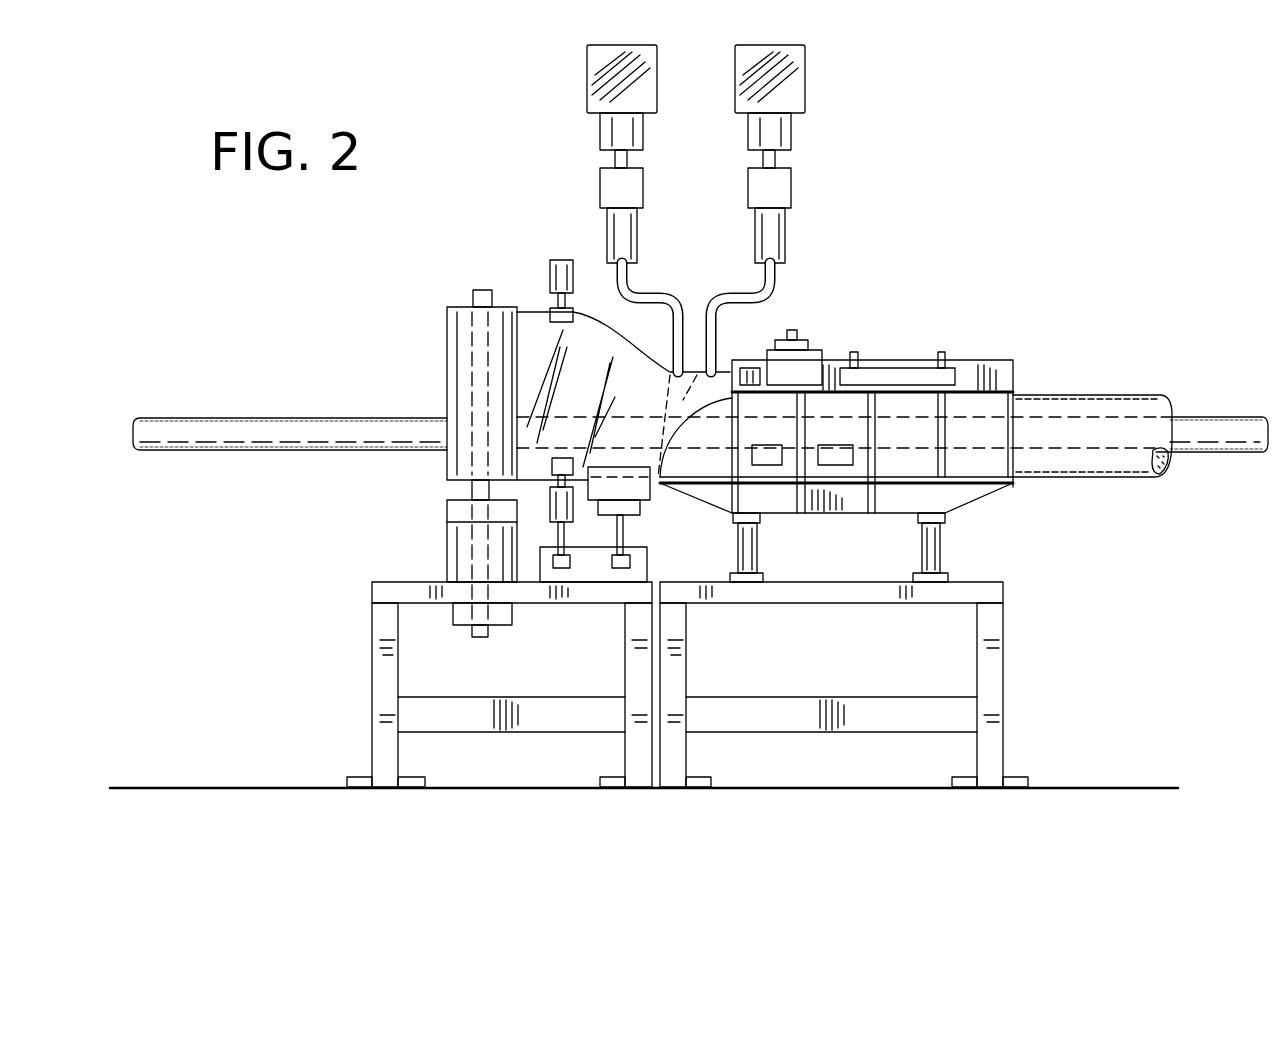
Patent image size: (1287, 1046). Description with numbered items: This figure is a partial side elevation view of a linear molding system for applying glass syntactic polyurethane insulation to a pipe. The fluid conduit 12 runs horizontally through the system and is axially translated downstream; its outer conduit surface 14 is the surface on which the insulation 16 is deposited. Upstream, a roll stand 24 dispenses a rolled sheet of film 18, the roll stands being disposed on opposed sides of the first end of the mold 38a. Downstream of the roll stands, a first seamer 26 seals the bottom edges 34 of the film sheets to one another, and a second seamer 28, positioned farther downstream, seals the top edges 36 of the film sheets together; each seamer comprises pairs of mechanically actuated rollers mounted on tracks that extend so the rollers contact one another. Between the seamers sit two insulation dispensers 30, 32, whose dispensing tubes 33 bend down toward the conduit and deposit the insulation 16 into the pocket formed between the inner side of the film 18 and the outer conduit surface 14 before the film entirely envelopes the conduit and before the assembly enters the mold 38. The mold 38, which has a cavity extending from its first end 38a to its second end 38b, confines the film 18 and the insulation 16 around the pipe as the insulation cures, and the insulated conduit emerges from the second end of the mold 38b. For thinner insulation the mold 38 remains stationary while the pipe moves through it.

The fluid conduit 12 is at (247, 461).
The outer conduit surface 14 is at (368, 447).
The insulation 16 is at (1167, 463).
The film 18 is at (533, 327).
The roll stand 24 is at (473, 297).
The first seamer 26 is at (650, 502).
The second seamer 28 is at (803, 368).
The insulation dispenser 30 is at (587, 96).
The insulation dispenser 32 is at (812, 98).
The dispensing tube 33 is at (630, 297).
The bottom edge 34 is at (548, 481).
The top edge 36 is at (617, 343).
The mold 38 is at (983, 373).
The first end of the mold 38a is at (660, 482).
The second end of the mold 38b is at (1015, 380).